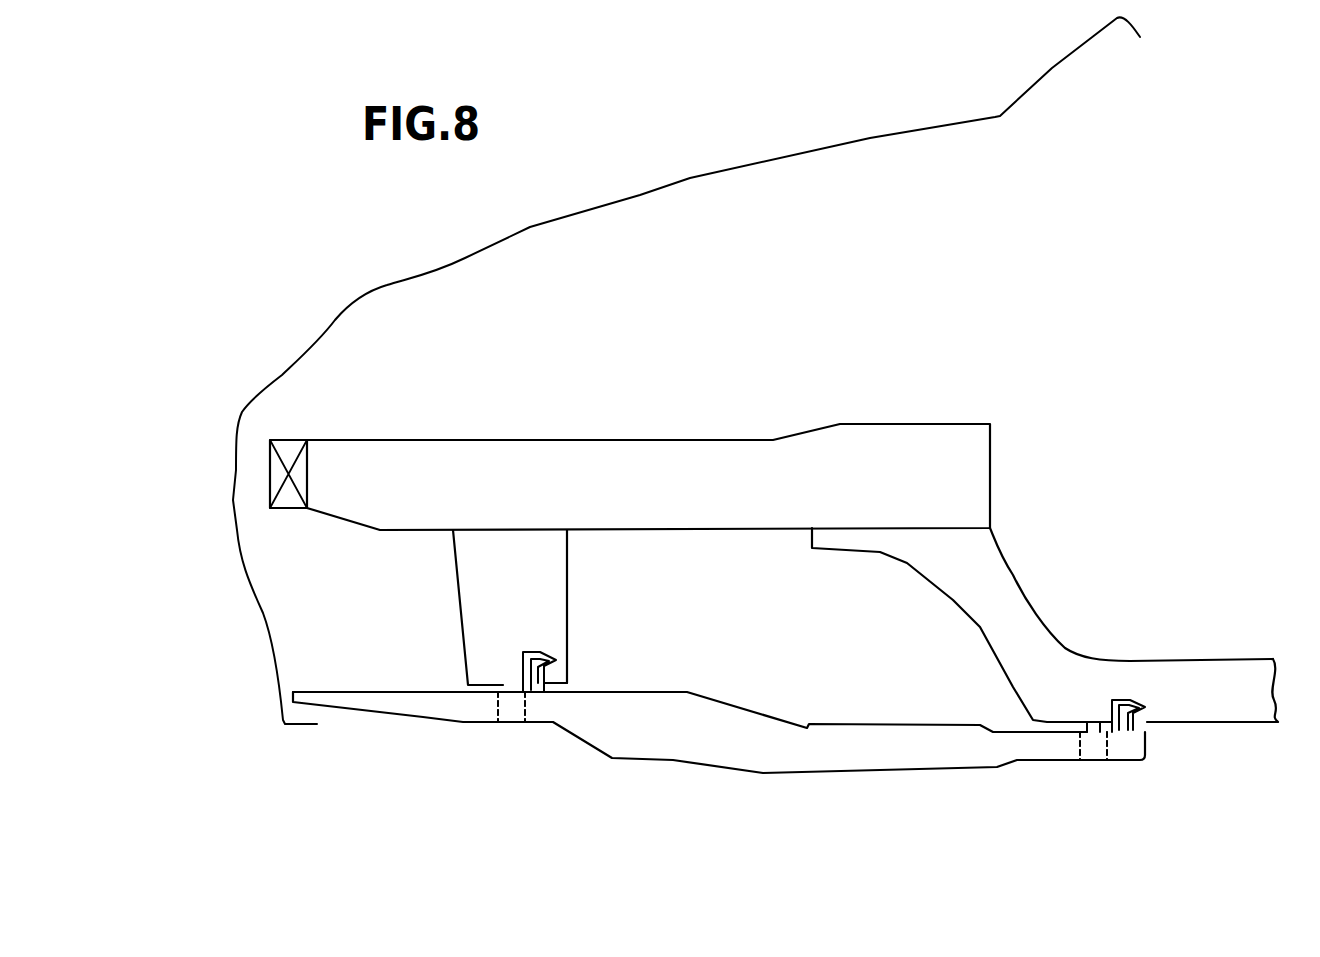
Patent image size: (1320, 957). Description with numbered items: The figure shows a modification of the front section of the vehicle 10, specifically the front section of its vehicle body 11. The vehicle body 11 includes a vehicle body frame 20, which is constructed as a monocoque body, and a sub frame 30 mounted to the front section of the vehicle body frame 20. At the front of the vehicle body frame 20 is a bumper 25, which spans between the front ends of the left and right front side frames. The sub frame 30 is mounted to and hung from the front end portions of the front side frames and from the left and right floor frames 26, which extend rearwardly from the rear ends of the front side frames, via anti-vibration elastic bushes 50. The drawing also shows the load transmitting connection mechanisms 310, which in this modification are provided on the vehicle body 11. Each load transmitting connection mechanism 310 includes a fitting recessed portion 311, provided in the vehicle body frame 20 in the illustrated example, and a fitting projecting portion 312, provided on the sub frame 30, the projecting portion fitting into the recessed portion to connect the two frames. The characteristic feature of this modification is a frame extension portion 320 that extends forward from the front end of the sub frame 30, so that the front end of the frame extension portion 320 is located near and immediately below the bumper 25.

The vehicle 10 is at (758, 162).
The vehicle body 11 is at (872, 306).
The vehicle body frame 20 is at (712, 437).
The bumper 25 is at (276, 473).
The floor frame 26 is at (1228, 706).
The sub frame 30 is at (733, 707).
The anti-vibration elastic bush 50 is at (497, 702).
The load transmitting connection mechanism 310 is at (667, 563).
The fitting recessed portion 311 is at (550, 656).
The fitting projecting portion 312 is at (547, 650).
The frame extension portion 320 is at (385, 705).